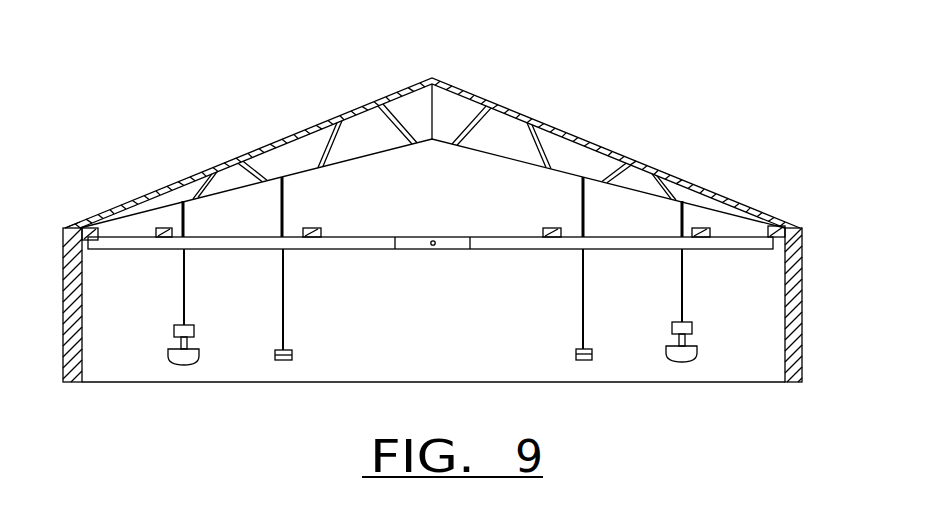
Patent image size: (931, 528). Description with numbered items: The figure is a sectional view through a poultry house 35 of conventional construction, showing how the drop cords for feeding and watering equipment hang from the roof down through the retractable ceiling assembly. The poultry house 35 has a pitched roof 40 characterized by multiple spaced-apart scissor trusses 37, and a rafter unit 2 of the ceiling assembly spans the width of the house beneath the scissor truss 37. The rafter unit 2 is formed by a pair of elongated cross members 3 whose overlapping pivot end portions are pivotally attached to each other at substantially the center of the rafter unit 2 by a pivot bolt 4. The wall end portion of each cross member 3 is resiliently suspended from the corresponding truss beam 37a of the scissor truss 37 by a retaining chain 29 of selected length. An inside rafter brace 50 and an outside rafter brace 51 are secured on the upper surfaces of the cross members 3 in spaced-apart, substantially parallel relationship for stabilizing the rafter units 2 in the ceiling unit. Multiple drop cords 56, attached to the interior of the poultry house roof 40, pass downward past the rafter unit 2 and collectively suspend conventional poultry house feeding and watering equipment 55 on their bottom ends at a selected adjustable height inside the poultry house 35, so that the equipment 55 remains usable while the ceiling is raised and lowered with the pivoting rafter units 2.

The rafter unit 2 is at (499, 254).
The cross member 3 is at (485, 237).
The pivot bolt 4 is at (432, 246).
The retaining chain 29 is at (80, 232).
The poultry house 35 is at (266, 143).
The scissor truss 37 is at (518, 109).
The truss beam 37a is at (462, 103).
The pitched roof 40 is at (172, 172).
The inside rafter brace 50 is at (313, 228).
The outside rafter brace 51 is at (168, 226).
The poultry house feeding and watering equipment 55 is at (275, 359).
The drop cord 56 is at (283, 270).